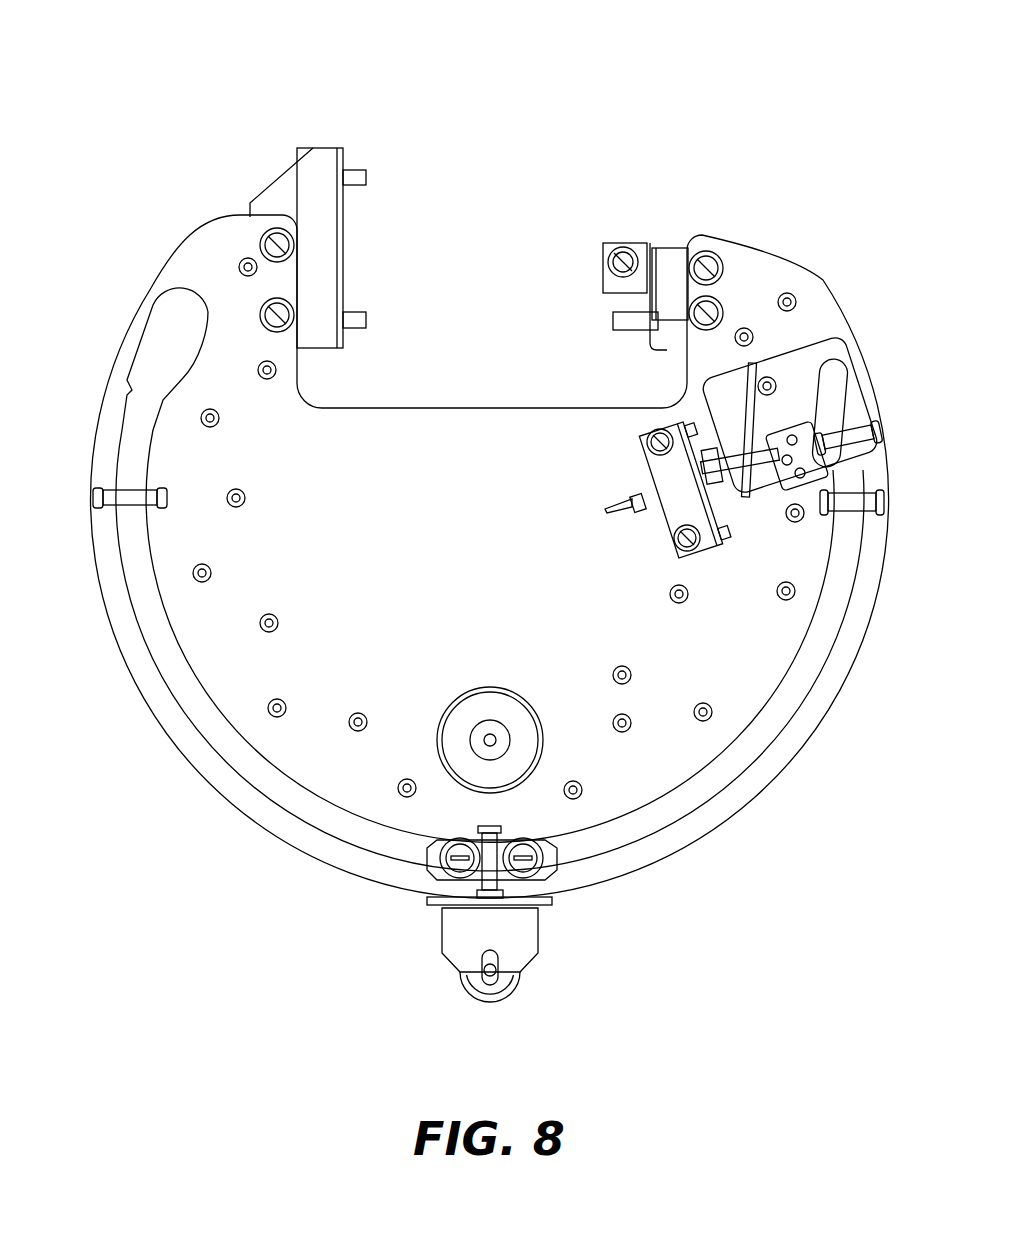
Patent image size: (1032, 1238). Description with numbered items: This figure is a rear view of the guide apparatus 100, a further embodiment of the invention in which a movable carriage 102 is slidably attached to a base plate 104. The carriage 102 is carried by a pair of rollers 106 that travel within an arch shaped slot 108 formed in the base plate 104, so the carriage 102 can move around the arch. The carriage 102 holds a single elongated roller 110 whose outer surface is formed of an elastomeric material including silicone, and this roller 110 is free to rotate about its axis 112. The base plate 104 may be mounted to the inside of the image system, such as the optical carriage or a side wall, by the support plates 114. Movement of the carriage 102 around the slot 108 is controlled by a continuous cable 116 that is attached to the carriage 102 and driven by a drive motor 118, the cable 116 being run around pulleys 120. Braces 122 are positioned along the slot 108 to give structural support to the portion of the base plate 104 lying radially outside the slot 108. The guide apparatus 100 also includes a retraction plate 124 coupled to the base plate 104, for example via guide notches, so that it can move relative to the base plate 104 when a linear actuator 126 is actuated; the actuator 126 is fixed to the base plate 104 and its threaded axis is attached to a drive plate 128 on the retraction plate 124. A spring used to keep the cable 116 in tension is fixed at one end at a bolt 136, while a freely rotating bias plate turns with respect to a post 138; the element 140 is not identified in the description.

The guide apparatus 100 is at (564, 82).
The movable carriage 102 is at (492, 934).
The base plate 104 is at (516, 519).
The rollers 106 is at (450, 868).
The arch shaped slot 108 is at (248, 755).
The elongated roller 110 is at (470, 992).
The axis 112 is at (480, 970).
The support plates 114 is at (310, 163).
The continuous cable 116 is at (203, 313).
The drive motor 118 is at (490, 707).
The pulleys 120 is at (240, 263).
The braces 122 is at (131, 490).
The retraction plate 124 is at (840, 352).
The linear actuator 126 is at (655, 462).
The drive plate 128 is at (815, 470).
The bolt 136 is at (631, 673).
The post 138 is at (670, 595).
The notch 140 is at (140, 334).